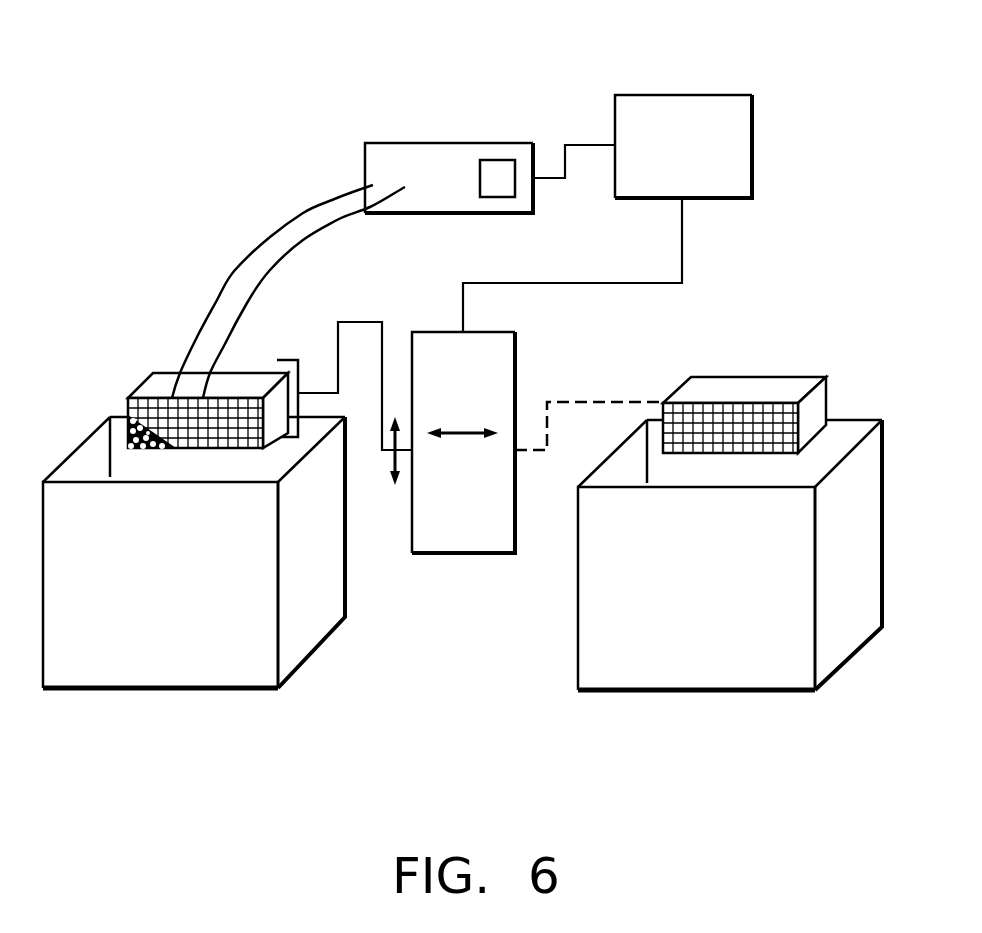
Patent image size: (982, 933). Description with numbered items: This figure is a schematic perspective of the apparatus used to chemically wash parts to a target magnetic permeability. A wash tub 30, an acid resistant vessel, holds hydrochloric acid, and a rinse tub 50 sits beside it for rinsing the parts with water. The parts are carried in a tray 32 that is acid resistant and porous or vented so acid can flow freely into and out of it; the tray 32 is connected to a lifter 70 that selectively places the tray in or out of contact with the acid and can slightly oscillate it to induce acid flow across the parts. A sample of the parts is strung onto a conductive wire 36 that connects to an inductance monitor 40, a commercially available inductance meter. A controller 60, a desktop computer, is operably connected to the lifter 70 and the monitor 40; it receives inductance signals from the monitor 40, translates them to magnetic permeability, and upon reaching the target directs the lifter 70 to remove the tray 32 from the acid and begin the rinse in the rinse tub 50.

The wash tub 30 is at (185, 663).
The tray 32 is at (148, 398).
The conductive wire 36 is at (233, 272).
The inductance monitor 40 is at (412, 157).
The rinse tub 50 is at (690, 662).
The controller 60 is at (695, 117).
The lifter 70 is at (453, 535).